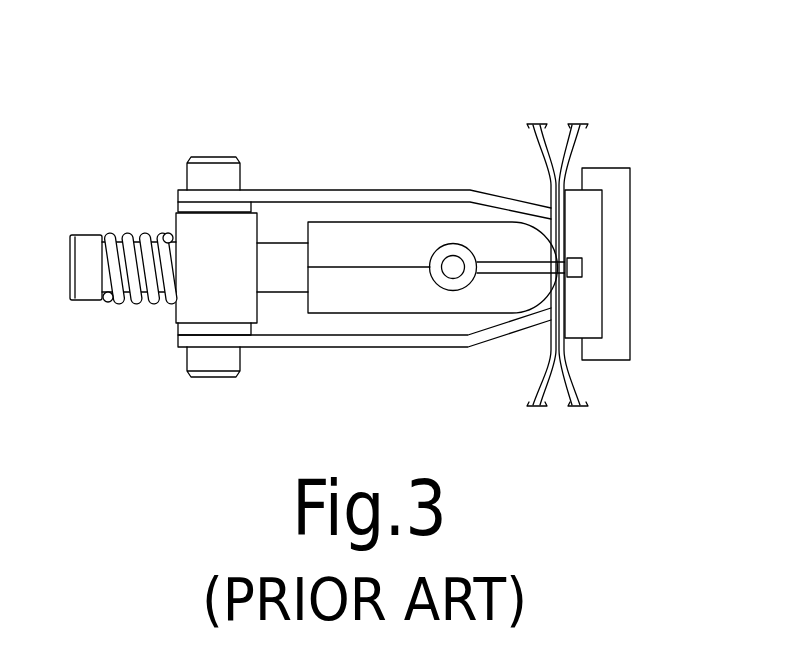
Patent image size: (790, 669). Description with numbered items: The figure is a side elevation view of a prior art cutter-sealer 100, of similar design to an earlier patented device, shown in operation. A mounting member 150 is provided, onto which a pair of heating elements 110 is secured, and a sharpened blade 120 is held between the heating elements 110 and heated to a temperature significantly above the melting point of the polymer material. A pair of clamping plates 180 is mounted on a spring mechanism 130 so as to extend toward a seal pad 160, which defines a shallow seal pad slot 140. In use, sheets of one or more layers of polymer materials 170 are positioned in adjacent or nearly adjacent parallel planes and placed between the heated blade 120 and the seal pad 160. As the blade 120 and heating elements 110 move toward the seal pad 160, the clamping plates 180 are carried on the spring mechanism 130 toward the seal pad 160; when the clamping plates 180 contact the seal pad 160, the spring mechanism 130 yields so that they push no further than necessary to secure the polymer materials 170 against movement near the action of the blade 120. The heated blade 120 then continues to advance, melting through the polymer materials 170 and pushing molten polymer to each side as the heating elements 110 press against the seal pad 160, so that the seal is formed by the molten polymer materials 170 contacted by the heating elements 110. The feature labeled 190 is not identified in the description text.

The prior art cutter-sealer 100 is at (150, 103).
The heating elements 110 is at (325, 280).
The sharpened blade 120 is at (508, 274).
The spring mechanism 130 is at (109, 235).
The seal pad slot 140 is at (583, 263).
The mounting member 150 is at (281, 243).
The seal pad 160 is at (592, 333).
The polymer materials 170 is at (538, 142).
The clamping plates 180 is at (492, 191).
The contact gap 190 is at (560, 232).